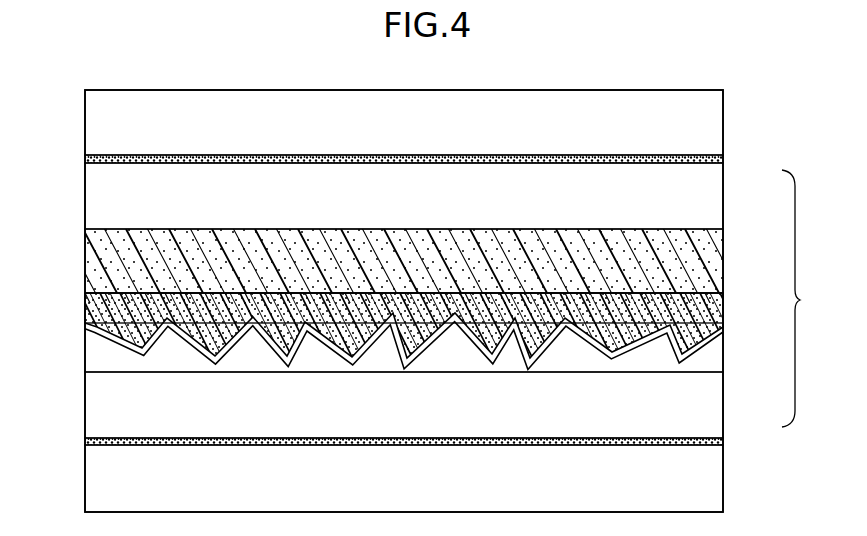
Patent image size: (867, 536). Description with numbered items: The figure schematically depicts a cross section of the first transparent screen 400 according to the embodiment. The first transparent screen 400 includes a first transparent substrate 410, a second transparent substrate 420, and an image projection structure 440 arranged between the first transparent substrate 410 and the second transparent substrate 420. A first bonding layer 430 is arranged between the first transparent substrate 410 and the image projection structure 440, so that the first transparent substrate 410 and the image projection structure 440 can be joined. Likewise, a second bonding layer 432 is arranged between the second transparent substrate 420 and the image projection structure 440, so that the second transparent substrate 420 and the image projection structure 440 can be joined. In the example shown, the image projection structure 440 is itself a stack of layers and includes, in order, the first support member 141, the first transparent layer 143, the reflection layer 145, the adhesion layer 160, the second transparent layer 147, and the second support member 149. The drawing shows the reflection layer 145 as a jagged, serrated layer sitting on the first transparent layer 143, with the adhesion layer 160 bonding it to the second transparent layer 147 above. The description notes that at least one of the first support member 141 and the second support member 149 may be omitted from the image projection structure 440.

The first transparent screen 400 is at (742, 86).
The first transparent substrate 410 is at (715, 477).
The second transparent substrate 420 is at (715, 118).
The first bonding layer 430 is at (715, 442).
The second bonding layer 432 is at (715, 158).
The image projection structure 440 is at (810, 298).
The first support member 141 is at (715, 403).
The first transparent layer 143 is at (715, 357).
The reflection layer 145 is at (715, 327).
The second transparent layer 147 is at (715, 262).
The second support member 149 is at (715, 196).
The adhesion layer 160 is at (715, 308).